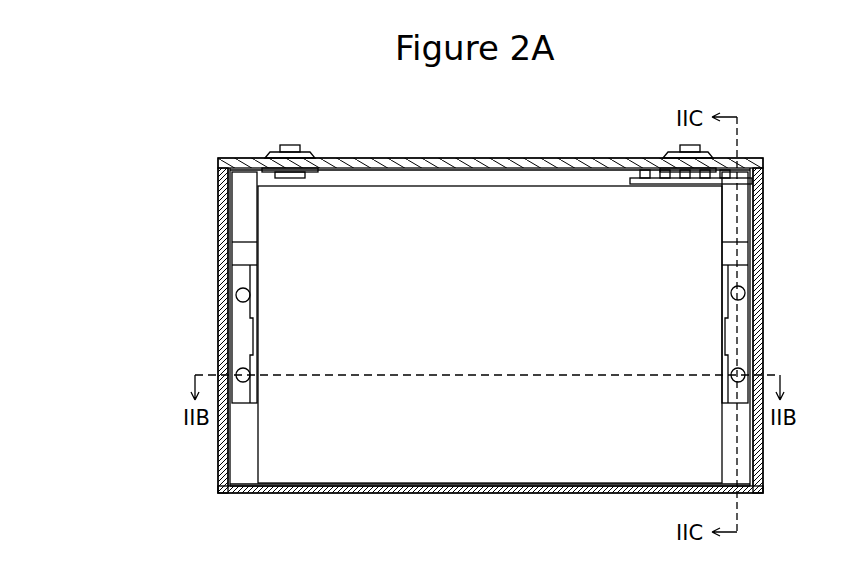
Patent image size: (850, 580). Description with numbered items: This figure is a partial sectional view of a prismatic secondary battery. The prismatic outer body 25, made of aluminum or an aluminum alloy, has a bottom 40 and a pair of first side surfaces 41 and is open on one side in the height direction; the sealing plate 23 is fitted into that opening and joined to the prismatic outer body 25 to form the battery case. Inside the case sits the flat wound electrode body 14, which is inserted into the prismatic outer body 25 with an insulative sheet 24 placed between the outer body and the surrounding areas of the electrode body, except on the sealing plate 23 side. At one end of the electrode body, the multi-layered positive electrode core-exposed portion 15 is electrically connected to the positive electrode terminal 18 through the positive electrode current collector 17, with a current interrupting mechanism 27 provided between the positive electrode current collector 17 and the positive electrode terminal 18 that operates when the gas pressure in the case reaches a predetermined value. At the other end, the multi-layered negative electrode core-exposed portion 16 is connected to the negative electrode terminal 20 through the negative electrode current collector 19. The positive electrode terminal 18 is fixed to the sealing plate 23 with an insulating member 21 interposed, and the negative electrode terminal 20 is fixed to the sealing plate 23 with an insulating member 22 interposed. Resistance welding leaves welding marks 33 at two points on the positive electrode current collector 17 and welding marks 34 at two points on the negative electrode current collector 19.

The flat wound electrode body 14 is at (508, 452).
The positive electrode core-exposed portion 15 is at (748, 466).
The negative electrode core-exposed portion 16 is at (240, 463).
The positive electrode current collector 17 is at (740, 226).
The positive electrode terminal 18 is at (680, 148).
The negative electrode current collector 19 is at (238, 276).
The negative electrode terminal 20 is at (289, 146).
The insulating member 21 is at (663, 157).
The insulating member 22 is at (318, 158).
The sealing plate 23 is at (531, 160).
The insulative sheet 24 is at (578, 494).
The prismatic outer body 25 is at (645, 494).
The current interrupting mechanism 27 is at (680, 184).
The welding marks 33 is at (730, 292).
The welding marks 34 is at (250, 304).
The bottom 40 is at (433, 494).
The first side surfaces 41 is at (228, 300).